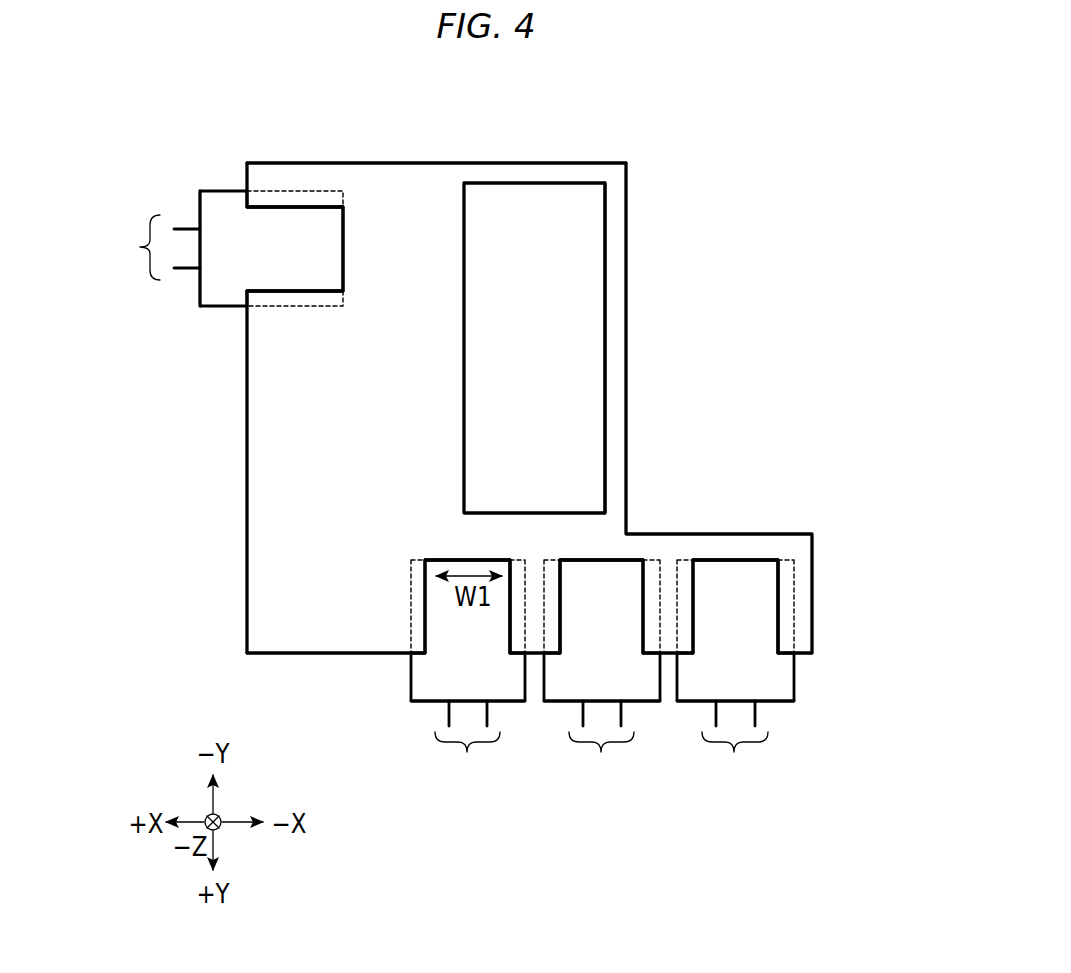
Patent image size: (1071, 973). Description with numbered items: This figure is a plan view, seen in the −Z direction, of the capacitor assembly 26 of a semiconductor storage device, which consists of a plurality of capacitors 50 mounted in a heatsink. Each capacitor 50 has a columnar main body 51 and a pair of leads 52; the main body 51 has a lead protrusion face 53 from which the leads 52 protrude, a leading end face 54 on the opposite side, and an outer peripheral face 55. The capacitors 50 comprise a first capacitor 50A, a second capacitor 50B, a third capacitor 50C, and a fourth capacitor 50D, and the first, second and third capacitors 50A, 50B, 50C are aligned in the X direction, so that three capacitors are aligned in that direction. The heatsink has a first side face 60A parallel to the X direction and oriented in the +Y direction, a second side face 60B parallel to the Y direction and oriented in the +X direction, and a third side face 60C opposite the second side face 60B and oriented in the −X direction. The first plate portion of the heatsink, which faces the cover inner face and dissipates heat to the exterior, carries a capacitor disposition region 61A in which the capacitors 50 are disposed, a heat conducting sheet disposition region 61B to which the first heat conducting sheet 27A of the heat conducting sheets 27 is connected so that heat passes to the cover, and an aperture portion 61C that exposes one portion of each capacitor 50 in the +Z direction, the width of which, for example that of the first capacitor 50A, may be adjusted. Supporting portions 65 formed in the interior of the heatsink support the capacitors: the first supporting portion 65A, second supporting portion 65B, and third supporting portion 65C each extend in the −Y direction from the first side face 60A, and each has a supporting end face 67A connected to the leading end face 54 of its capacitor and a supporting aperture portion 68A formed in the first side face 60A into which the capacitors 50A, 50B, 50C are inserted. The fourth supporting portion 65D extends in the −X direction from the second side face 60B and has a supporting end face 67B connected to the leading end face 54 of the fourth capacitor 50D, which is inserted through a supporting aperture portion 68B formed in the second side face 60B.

The capacitor assembly 26 is at (699, 95).
The heat conducting sheet 27 is at (540, 311).
The first heat conducting sheet 27A is at (521, 212).
The capacitor 50 is at (431, 540).
The first capacitor 50A is at (422, 728).
The second capacitor 50B is at (550, 665).
The third capacitor 50C is at (690, 724).
The fourth capacitor 50D is at (192, 180).
The main body 51 is at (239, 255).
The lead 52 is at (434, 504).
The lead protrusion face 53 is at (200, 290).
The leading end face 54 is at (343, 227).
The outer peripheral face 55 is at (288, 222).
The first side face 60A is at (805, 675).
The second side face 60B is at (247, 628).
The third side face 60C is at (627, 232).
The capacitor disposition region 61A is at (263, 163).
The heat conducting sheet disposition region 61B is at (608, 208).
The aperture portion 61C is at (288, 291).
The supporting portion 65 is at (638, 501).
The first supporting portion 65A is at (473, 633).
The second supporting portion 65B is at (603, 637).
The third supporting portion 65C is at (738, 627).
The fourth supporting portion 65D is at (300, 248).
The supporting end face 67A is at (472, 561).
The supporting end face 67B is at (342, 272).
The supporting aperture portion 68A is at (437, 663).
The supporting aperture portion 68B is at (230, 171).